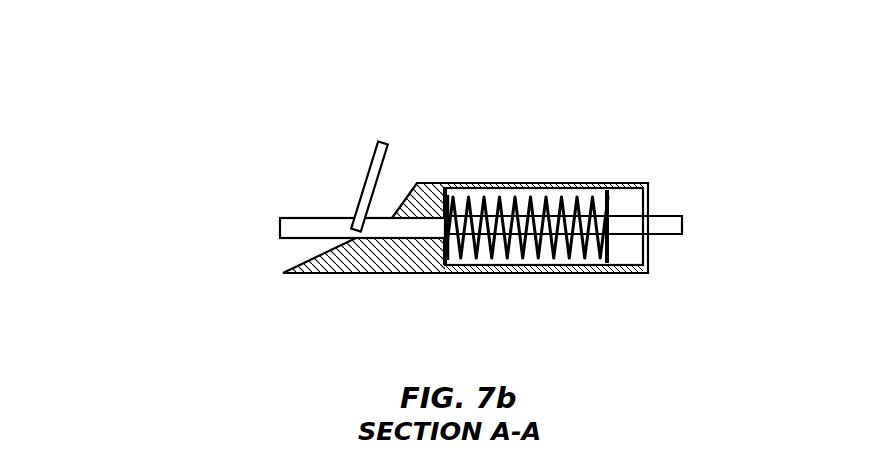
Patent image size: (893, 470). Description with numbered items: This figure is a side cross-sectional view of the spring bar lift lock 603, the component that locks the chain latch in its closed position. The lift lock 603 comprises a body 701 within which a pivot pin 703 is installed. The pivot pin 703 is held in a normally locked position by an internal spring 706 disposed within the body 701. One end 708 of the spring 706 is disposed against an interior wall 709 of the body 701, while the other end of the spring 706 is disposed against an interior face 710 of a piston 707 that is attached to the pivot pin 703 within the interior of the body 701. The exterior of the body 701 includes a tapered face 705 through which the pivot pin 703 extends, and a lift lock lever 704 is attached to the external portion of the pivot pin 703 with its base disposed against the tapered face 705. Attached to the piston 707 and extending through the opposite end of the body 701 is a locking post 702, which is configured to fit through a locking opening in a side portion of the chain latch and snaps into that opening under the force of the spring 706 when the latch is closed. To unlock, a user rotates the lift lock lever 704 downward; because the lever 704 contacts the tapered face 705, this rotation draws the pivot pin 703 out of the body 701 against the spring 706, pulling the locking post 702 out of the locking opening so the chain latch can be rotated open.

The lift lock 603 is at (543, 147).
The body 701 is at (468, 190).
The locking post 702 is at (675, 217).
The pivot pin 703 is at (297, 220).
The lift lock lever 704 is at (363, 173).
The tapered face 705 is at (407, 197).
The internal spring 706 is at (605, 263).
The piston 707 is at (628, 200).
The spring end 708 is at (457, 260).
The interior wall 709 is at (443, 243).
The interior face 710 is at (595, 188).